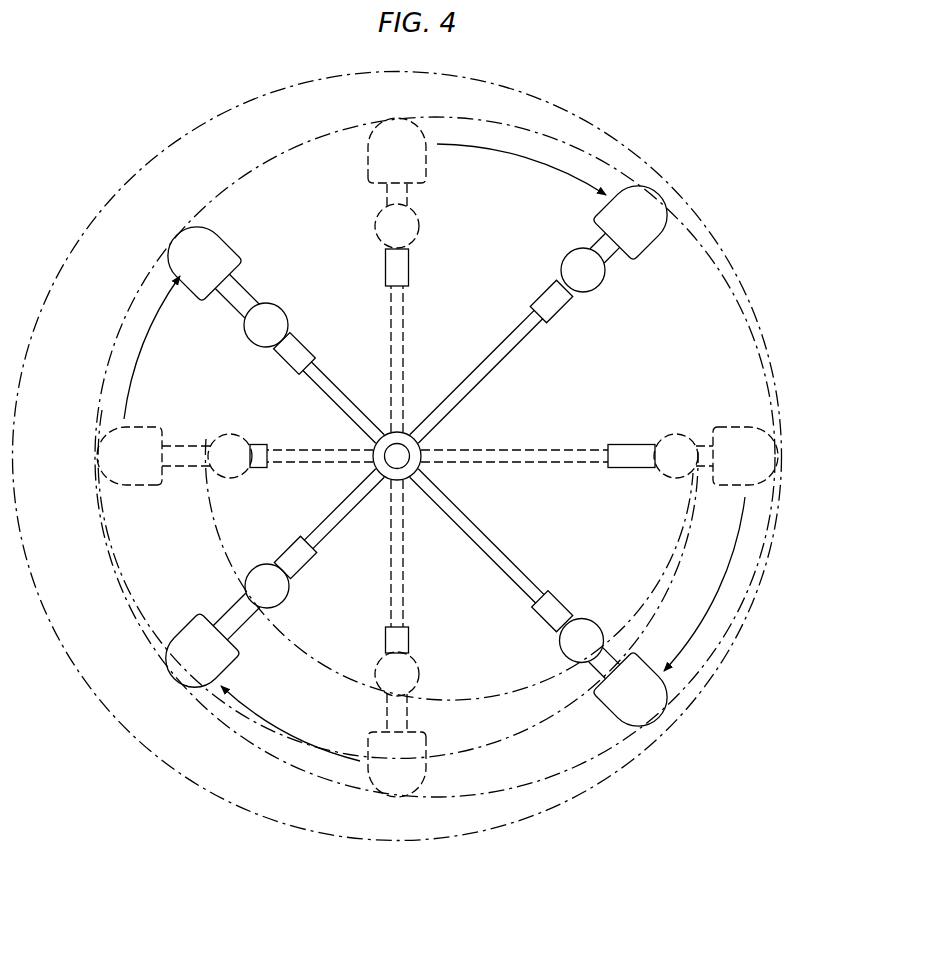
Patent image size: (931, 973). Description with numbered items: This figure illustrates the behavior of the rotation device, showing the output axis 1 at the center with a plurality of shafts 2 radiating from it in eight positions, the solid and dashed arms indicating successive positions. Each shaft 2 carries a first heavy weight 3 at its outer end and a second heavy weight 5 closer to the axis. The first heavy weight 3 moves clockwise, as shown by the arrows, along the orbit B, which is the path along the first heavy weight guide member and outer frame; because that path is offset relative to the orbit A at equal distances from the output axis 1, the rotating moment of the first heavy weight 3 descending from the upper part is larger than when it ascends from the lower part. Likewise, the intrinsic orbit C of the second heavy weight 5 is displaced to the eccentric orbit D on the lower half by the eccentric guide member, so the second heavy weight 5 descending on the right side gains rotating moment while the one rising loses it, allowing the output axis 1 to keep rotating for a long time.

The output axis 1 is at (405, 474).
The shaft 2 is at (305, 338).
The first heavy weight 3 is at (237, 252).
The second heavy weight 5 is at (256, 344).
The orbit A is at (108, 205).
The orbit B is at (153, 270).
The orbit C is at (506, 742).
The orbit D is at (490, 694).